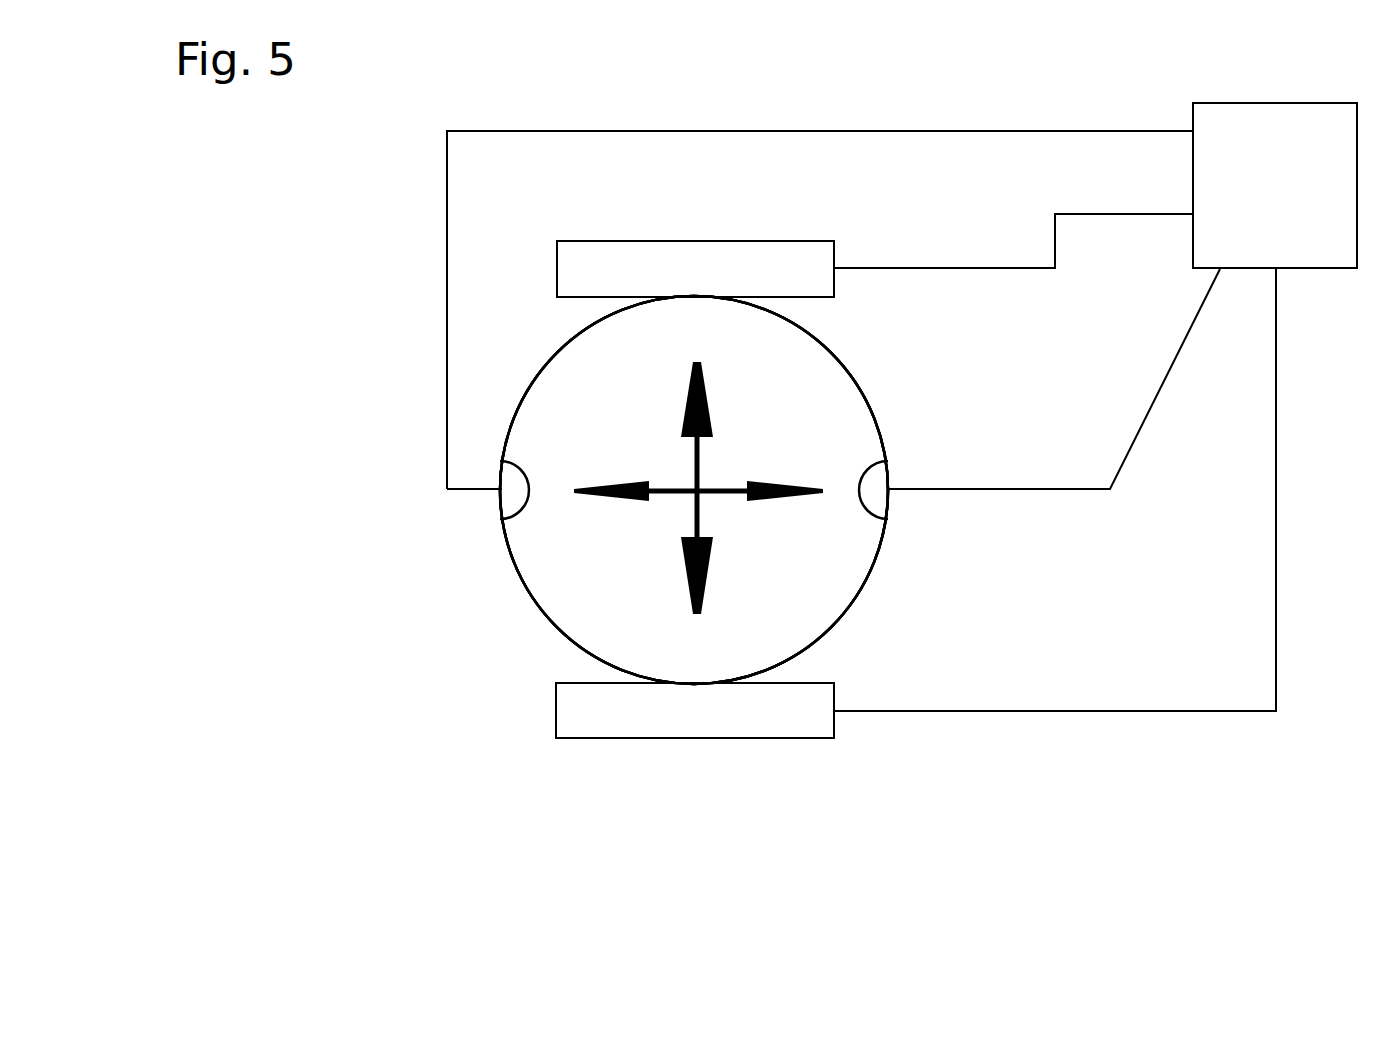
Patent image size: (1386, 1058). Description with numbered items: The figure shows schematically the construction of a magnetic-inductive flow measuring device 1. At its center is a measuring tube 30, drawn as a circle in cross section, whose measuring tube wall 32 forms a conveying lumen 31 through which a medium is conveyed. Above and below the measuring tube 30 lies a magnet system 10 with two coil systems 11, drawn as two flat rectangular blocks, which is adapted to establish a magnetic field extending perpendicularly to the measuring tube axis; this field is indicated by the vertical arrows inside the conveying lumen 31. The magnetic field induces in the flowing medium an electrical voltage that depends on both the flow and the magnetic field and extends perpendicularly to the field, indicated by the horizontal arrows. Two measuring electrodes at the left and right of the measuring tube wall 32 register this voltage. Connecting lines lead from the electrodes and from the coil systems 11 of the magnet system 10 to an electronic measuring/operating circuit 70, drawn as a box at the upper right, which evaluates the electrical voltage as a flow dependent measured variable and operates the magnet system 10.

The magnetic-inductive flow measuring device 1 is at (418, 680).
The magnet system 10 is at (554, 764).
The electrode contact 11 is at (614, 268).
The measuring tube 30 is at (833, 352).
The conveying lumen 31 is at (865, 391).
The measuring tube wall 32 is at (848, 615).
The electronic measuring/operating circuit 70 is at (1275, 185).